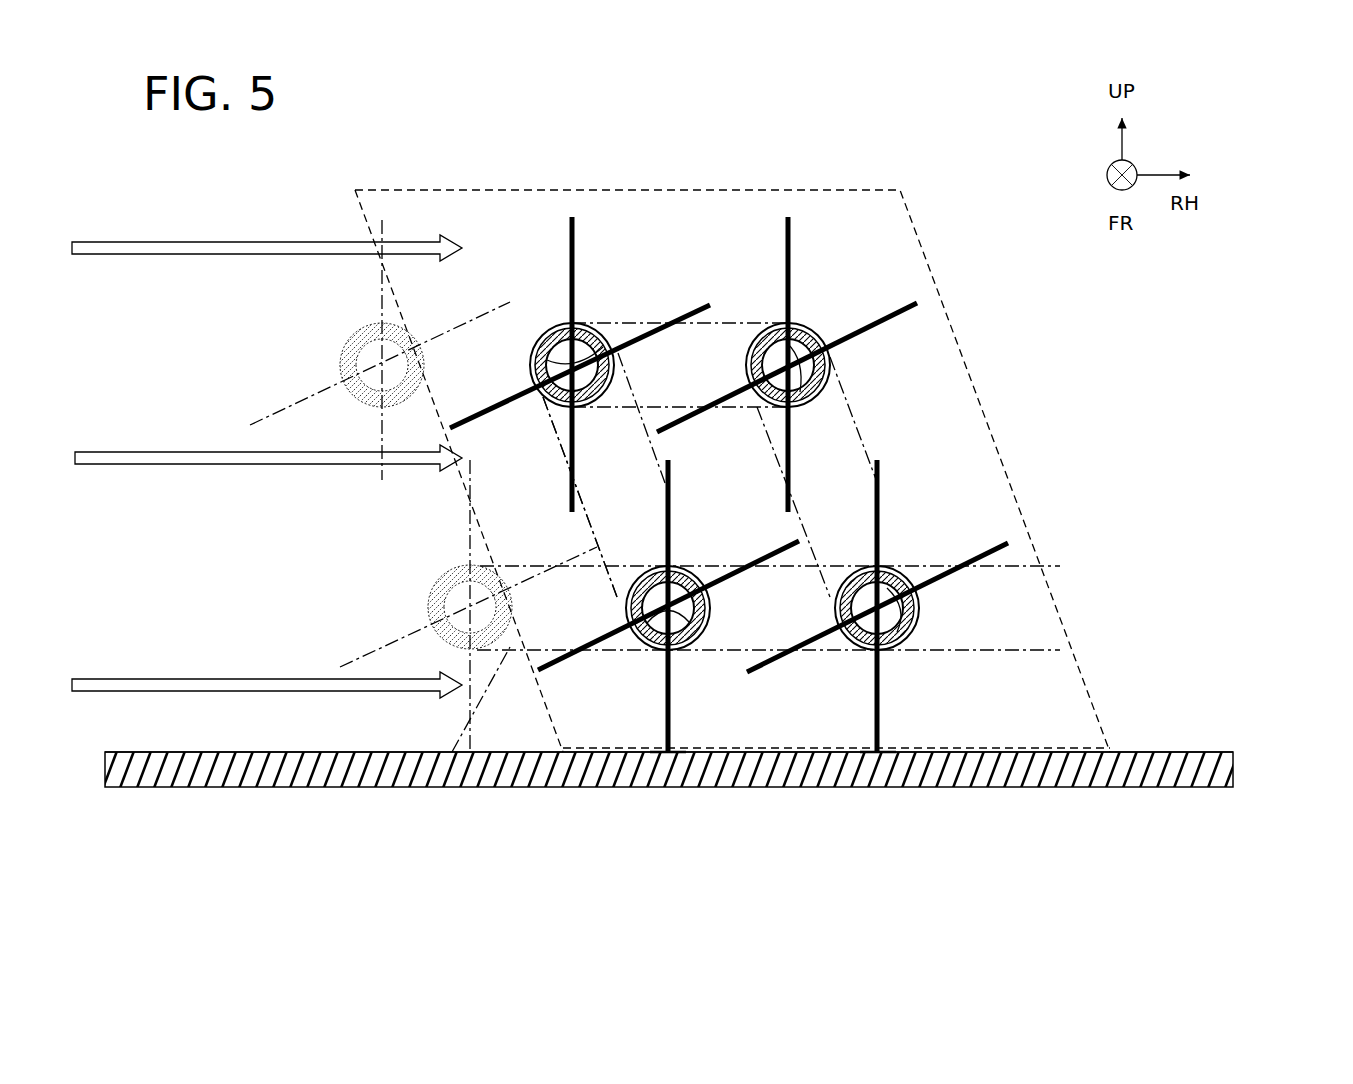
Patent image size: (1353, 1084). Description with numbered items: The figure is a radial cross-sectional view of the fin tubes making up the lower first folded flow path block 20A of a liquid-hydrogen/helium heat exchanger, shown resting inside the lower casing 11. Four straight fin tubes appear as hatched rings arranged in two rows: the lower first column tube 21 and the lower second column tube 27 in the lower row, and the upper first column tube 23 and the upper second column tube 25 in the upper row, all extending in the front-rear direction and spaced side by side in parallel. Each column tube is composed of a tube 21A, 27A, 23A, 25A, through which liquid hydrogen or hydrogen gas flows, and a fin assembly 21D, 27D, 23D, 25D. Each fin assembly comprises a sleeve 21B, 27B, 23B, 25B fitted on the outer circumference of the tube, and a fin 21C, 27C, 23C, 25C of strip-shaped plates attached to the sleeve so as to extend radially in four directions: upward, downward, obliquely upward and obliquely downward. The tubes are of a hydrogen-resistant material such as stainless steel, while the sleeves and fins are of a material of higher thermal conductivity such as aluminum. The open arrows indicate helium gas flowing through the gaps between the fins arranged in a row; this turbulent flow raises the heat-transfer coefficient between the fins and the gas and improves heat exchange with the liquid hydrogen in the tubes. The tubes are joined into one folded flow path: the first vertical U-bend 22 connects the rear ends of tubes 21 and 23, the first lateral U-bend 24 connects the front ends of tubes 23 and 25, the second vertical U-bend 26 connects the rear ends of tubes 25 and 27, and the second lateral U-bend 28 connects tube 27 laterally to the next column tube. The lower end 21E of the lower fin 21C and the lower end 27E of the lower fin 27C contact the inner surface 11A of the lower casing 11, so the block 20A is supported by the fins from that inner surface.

The lower casing 11 is at (1160, 788).
The inner surface of the lower casing 11A is at (1197, 751).
The lower first folded flow path block 20A is at (900, 190).
The lower first column tube 21 is at (860, 670).
The tube 21A is at (915, 620).
The sleeve 21B is at (905, 637).
The fin 21C is at (878, 680).
The fin assembly 21D is at (1123, 863).
The lower end of the lower fin 21E is at (893, 758).
The first vertical U-bend 22 is at (900, 548).
The upper first column tube 23 is at (806, 316).
The tube 23A is at (825, 395).
The sleeve 23B is at (833, 372).
The fin 23C is at (858, 323).
The fin assembly 23D is at (1033, 237).
The first lateral U-bend 24 is at (725, 322).
The upper second column tube 25 is at (541, 318).
The tube 25A is at (535, 343).
The sleeve 25B is at (598, 328).
The fin 25C is at (640, 335).
The fin assembly 25D is at (717, 122).
The second vertical U-bend 26 is at (587, 518).
The lower second column tube 27 is at (645, 665).
The tube 27A is at (633, 641).
The sleeve 27B is at (683, 640).
The fin 27C is at (670, 703).
The fin assembly 27D is at (798, 837).
The lower end of the lower fin 27E is at (658, 754).
The second lateral U-bend 28 is at (452, 752).